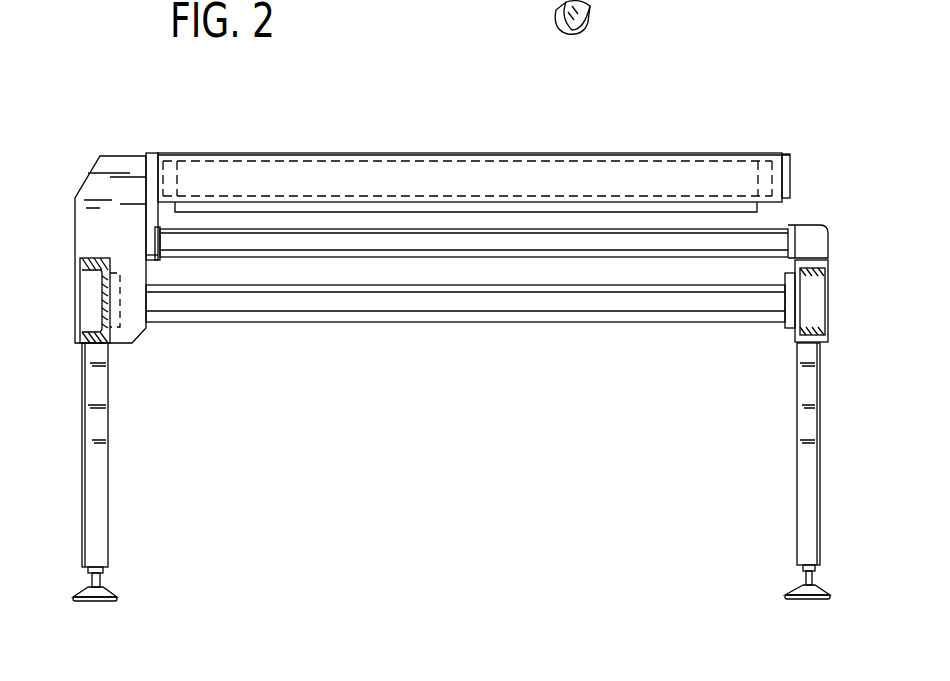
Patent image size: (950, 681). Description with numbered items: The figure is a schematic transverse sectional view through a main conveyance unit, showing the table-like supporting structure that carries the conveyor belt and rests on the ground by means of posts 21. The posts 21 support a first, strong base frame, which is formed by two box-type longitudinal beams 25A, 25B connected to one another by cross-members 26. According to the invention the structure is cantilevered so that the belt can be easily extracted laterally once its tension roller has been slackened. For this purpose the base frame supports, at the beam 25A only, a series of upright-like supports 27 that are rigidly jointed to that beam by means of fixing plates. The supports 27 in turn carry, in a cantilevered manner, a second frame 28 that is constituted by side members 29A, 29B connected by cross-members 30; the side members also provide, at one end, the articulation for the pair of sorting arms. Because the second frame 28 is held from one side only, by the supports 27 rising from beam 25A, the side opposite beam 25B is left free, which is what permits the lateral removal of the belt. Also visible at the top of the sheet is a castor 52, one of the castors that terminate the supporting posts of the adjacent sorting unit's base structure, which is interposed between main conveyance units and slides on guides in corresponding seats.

The post 21 is at (98, 490).
The box-type longitudinal beam 25A is at (85, 320).
The box-type longitudinal beam 25B is at (815, 317).
The cross-member 26 is at (450, 302).
The upright-like support 27 is at (92, 233).
The second frame 28 is at (796, 178).
The side member 29A is at (158, 157).
The side member 29B is at (787, 155).
The cross-member 30 is at (734, 172).
The castor 52 is at (553, 22).